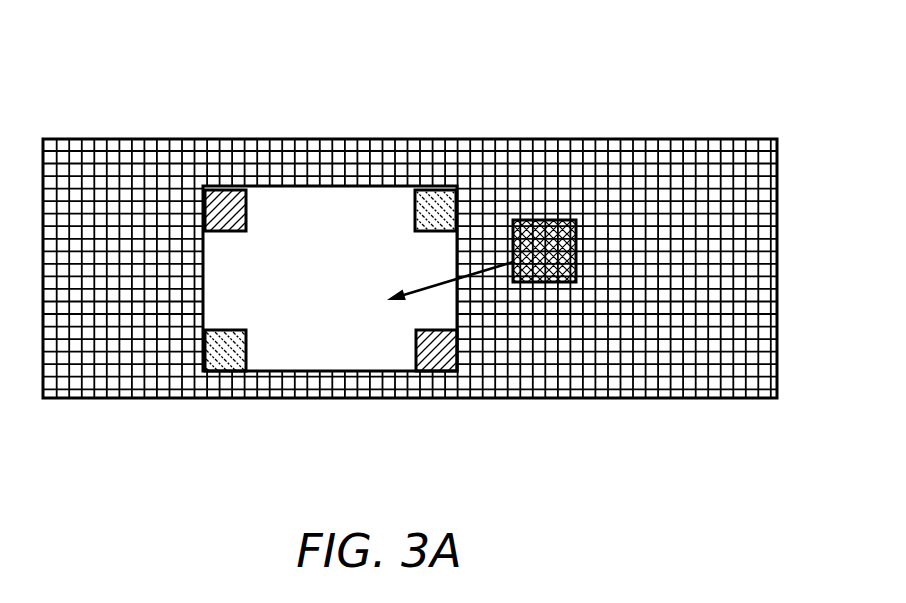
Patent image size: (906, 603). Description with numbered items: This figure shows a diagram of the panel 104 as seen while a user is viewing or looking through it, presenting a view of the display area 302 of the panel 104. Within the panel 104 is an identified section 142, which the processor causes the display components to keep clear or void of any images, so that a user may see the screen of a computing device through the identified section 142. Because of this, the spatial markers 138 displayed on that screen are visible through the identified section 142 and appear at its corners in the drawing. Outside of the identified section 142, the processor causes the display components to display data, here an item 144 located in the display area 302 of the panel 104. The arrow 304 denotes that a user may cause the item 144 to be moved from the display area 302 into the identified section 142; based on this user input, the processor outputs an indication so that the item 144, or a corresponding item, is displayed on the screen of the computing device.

The panel 104 is at (120, 400).
The display area 302 is at (386, 148).
The identified section 142 is at (287, 184).
The spatial markers 138 is at (457, 335).
The item 144 is at (544, 219).
The arrow 304 is at (481, 270).